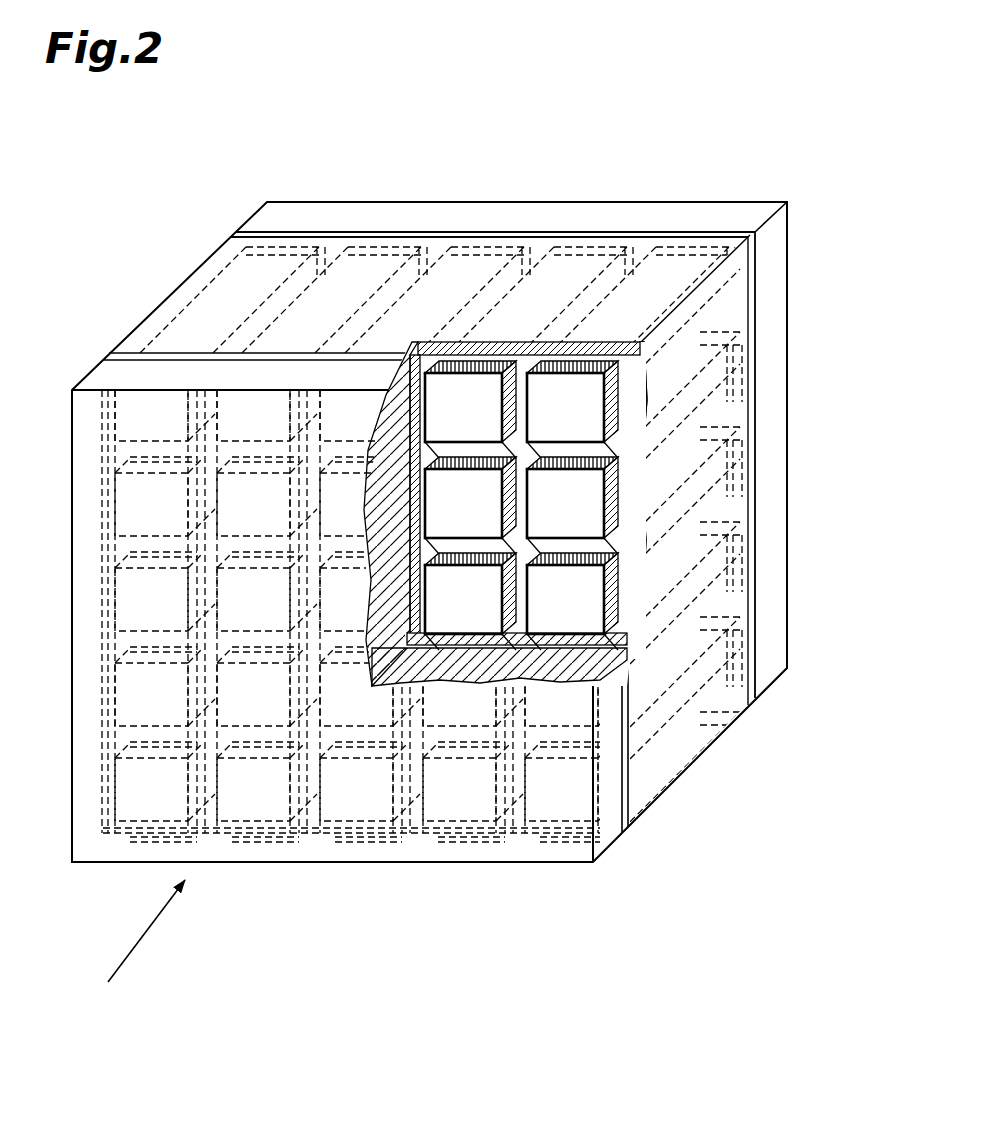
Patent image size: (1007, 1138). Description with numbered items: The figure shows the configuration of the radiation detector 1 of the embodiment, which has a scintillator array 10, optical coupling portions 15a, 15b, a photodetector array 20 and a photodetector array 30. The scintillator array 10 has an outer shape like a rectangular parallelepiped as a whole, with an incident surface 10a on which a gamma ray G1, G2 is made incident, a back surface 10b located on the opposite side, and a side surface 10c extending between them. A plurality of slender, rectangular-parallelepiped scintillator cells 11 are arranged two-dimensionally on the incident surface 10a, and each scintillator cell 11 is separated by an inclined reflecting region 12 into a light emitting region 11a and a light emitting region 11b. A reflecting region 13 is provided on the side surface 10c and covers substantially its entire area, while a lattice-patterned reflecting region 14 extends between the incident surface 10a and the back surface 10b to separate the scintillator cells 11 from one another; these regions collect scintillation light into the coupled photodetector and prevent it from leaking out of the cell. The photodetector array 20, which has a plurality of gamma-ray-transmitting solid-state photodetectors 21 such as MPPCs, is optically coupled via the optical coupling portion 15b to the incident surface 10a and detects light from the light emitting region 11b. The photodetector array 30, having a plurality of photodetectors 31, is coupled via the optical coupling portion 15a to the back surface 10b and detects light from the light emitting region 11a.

The radiation detector 1 is at (734, 140).
The scintillator array 10 is at (205, 262).
The incident surface 10a is at (633, 812).
The back surface 10b is at (658, 232).
The side surface 10c is at (440, 236).
The scintillator cell 11 is at (617, 487).
The light emitting region 11a is at (707, 303).
The light emitting region 11b is at (655, 350).
The reflecting region 12 is at (662, 362).
The reflecting region 13 is at (633, 577).
The reflecting region 14 is at (612, 442).
The optical coupling portion 15a is at (250, 234).
The optical coupling portion 15b is at (130, 354).
The photodetector array 20 is at (90, 372).
The photodetector 21 is at (560, 503).
The photodetector array 30 is at (297, 202).
The photodetector 31 is at (300, 236).
The gamma ray G1 is at (187, 931).
The gamma ray G2 is at (150, 930).